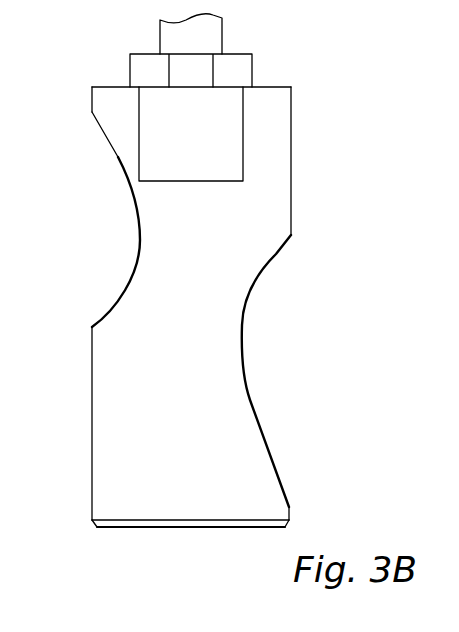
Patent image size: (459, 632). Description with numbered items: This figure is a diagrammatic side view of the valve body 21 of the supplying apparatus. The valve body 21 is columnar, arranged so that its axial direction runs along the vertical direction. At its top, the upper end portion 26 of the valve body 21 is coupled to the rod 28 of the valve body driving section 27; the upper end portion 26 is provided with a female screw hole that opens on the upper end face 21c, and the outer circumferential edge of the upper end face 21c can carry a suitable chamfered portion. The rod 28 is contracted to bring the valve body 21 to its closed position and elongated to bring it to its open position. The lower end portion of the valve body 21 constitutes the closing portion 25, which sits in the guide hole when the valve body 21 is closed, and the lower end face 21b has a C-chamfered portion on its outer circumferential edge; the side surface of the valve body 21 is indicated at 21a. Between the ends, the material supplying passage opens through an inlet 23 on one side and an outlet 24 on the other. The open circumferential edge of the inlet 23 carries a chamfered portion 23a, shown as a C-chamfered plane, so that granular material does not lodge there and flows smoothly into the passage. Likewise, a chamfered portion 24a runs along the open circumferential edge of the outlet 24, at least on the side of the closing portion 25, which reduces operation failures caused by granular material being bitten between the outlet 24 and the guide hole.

The valve body 21 is at (80, 77).
The side surface of grip body 21a is at (102, 452).
The lower end face 21b is at (212, 527).
The upper end face 21c is at (270, 85).
The inlet 23 is at (88, 242).
The chamfered portion 23a is at (138, 233).
The outlet 24 is at (295, 371).
The chamfered portion 24a is at (245, 302).
The closing portion 25 is at (172, 510).
The upper end portion 26 is at (280, 104).
The valve body driving section 27 is at (217, 50).
The rod 28 is at (211, 27).